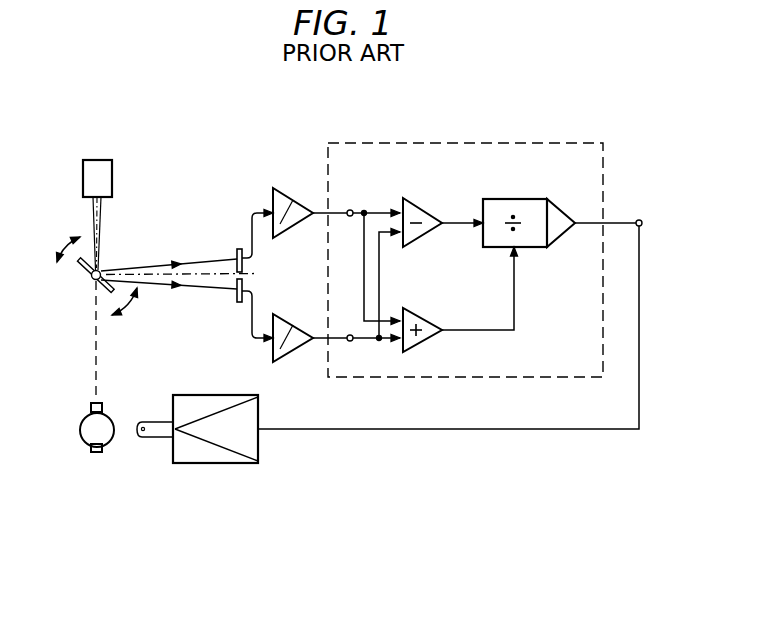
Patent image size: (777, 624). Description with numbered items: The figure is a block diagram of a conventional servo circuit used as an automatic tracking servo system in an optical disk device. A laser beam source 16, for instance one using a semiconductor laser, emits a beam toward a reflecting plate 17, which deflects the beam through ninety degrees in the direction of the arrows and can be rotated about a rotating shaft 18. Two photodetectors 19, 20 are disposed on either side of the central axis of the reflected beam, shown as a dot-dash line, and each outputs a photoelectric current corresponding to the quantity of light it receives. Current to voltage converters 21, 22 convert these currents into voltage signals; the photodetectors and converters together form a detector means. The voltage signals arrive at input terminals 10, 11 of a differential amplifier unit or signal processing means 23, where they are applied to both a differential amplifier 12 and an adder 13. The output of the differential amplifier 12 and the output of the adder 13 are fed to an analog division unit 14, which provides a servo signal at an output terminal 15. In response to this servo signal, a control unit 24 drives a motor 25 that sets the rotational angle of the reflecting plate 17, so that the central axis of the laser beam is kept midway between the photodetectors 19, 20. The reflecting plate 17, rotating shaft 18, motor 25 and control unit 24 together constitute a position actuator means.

The input terminal 10 is at (350, 210).
The input terminal 11 is at (350, 341).
The differential amplifier 12 is at (423, 199).
The adder 13 is at (420, 350).
The analog division unit 14 is at (515, 199).
The output terminal 15 is at (639, 220).
The laser beam source 16 is at (104, 160).
The reflecting plate 17 is at (143, 276).
The rotating shaft 18 is at (90, 283).
The photodetector 19 is at (237, 252).
The photodetector 20 is at (237, 297).
The current to voltage converter 21 is at (291, 231).
The current to voltage converter 22 is at (291, 356).
The differential amplifier unit or signal processing means 23 is at (527, 142).
The control unit 24 is at (258, 454).
The motor 25 is at (81, 436).